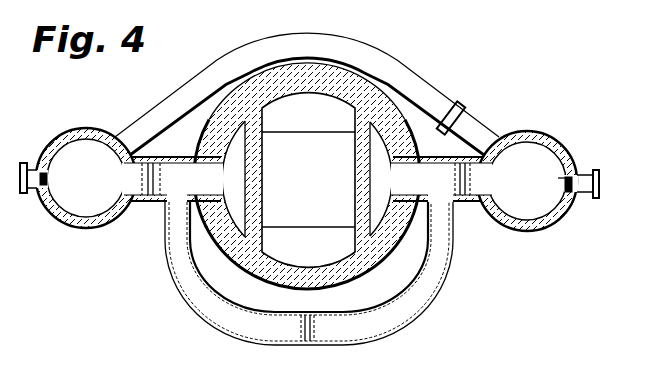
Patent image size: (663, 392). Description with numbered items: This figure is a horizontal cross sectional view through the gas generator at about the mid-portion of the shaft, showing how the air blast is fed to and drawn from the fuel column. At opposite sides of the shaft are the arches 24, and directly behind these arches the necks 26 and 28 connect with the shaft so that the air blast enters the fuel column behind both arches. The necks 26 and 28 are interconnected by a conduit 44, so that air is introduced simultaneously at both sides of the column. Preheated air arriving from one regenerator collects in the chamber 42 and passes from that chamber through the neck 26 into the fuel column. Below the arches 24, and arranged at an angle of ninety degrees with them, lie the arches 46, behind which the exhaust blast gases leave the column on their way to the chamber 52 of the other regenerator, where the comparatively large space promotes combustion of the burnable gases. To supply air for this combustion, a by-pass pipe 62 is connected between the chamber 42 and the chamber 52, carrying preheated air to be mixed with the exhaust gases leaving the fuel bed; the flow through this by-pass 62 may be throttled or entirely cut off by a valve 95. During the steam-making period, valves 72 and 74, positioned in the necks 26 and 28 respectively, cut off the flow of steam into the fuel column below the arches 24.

The arches 24 is at (262, 157).
The neck 26 is at (182, 160).
The neck 28 is at (425, 175).
The chamber 42 is at (85, 211).
The conduit 44 is at (375, 327).
The arches 46 is at (315, 125).
The chamber 52 is at (528, 212).
The by-pass pipe 62 is at (185, 84).
The valve 72 is at (143, 203).
The valve 74 is at (460, 203).
The valve 95 is at (458, 112).